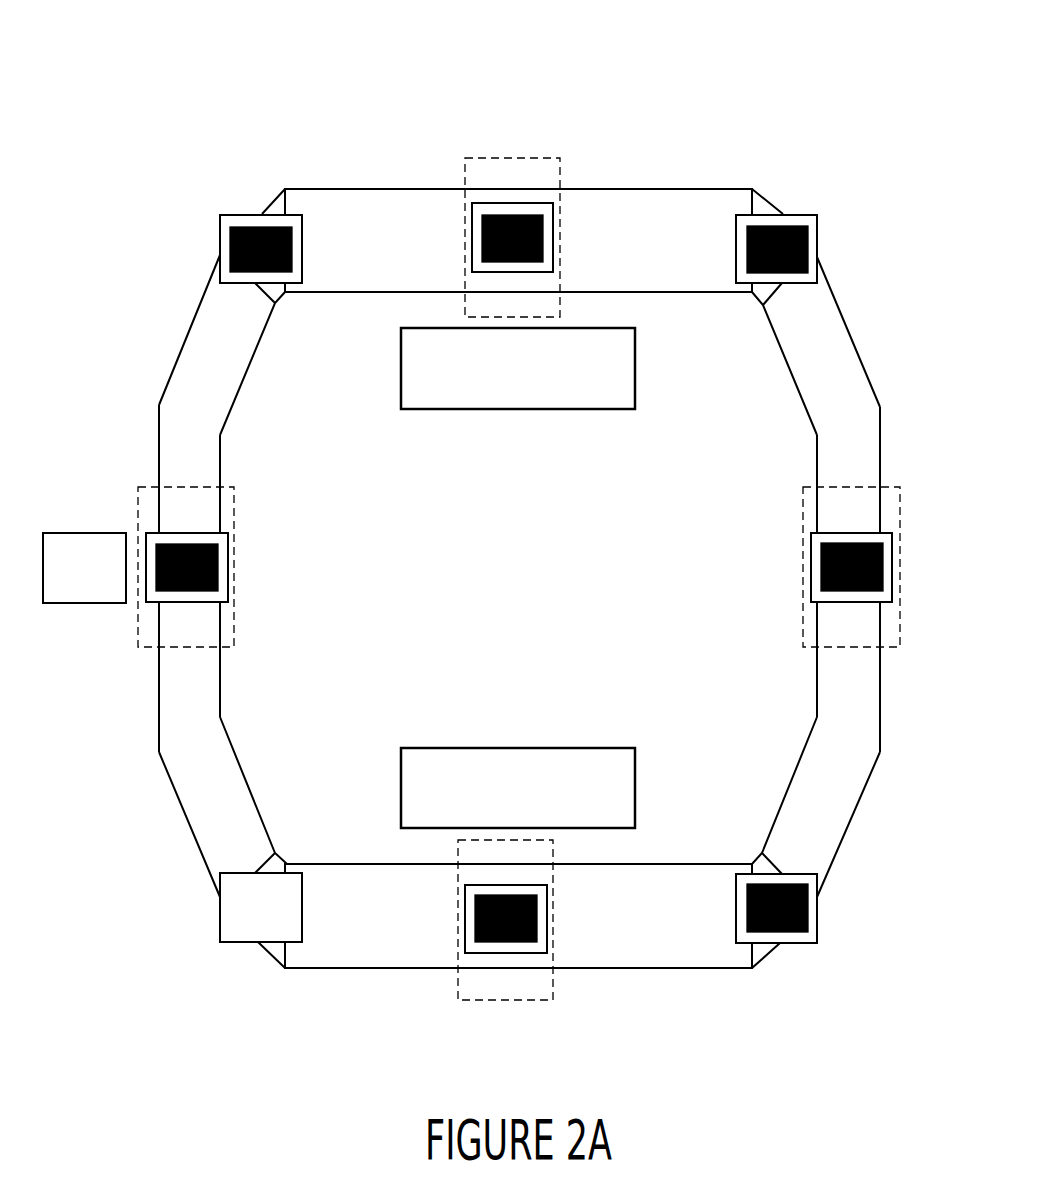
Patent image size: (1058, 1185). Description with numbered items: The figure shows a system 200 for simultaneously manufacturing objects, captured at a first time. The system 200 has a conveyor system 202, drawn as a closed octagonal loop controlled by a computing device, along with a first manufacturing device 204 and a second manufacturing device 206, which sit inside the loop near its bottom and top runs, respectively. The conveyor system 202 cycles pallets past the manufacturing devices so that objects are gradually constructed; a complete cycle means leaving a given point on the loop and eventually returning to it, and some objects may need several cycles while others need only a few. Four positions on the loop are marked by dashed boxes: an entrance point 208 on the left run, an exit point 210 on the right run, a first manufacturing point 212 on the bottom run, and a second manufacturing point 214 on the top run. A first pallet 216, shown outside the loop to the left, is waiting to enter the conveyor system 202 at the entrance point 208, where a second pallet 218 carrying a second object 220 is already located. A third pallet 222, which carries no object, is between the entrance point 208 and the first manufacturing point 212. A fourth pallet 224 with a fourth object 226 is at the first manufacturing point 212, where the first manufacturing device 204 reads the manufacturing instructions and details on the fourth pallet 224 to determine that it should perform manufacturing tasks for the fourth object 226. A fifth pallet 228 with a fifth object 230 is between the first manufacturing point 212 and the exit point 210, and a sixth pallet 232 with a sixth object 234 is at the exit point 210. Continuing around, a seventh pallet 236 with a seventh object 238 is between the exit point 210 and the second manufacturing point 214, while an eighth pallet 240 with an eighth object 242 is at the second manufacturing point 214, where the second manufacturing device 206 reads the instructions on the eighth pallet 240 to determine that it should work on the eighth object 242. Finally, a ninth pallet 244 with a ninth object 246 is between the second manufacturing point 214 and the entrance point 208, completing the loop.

The system 200 is at (158, 65).
The conveyor system 202 is at (369, 238).
The first manufacturing device 204 is at (572, 748).
The second manufacturing device 206 is at (635, 372).
The entrance point 208 is at (234, 487).
The exit point 210 is at (900, 487).
The first manufacturing point 212 is at (553, 1000).
The second manufacturing point 214 is at (548, 155).
The first pallet 216 is at (72, 533).
The second pallet 218 is at (228, 532).
The second object 220 is at (218, 562).
The third pallet 222 is at (275, 853).
The fourth pallet 224 is at (547, 897).
The fourth object 226 is at (537, 935).
The fifth pallet 228 is at (817, 880).
The fifth object 230 is at (808, 902).
The sixth pallet 232 is at (811, 530).
The sixth object 234 is at (821, 570).
The seventh pallet 236 is at (797, 213).
The seventh object 238 is at (808, 243).
The eighth pallet 240 is at (553, 203).
The eighth object 242 is at (543, 232).
The ninth pallet 244 is at (235, 215).
The ninth object 246 is at (262, 228).